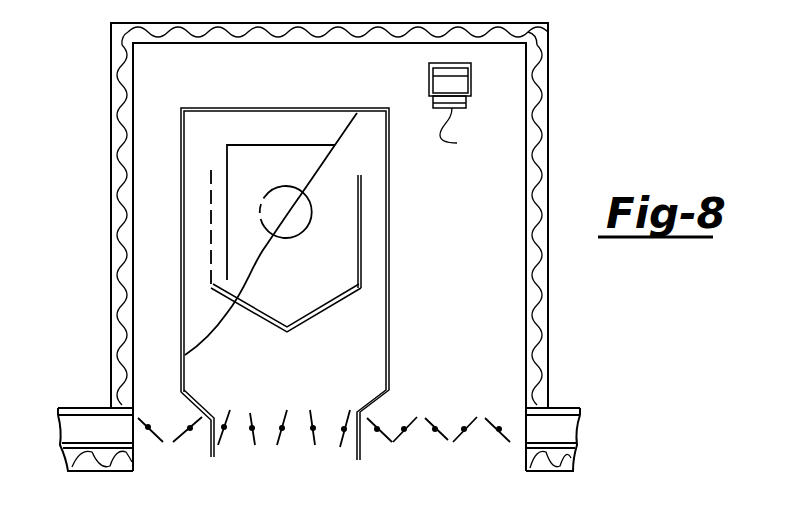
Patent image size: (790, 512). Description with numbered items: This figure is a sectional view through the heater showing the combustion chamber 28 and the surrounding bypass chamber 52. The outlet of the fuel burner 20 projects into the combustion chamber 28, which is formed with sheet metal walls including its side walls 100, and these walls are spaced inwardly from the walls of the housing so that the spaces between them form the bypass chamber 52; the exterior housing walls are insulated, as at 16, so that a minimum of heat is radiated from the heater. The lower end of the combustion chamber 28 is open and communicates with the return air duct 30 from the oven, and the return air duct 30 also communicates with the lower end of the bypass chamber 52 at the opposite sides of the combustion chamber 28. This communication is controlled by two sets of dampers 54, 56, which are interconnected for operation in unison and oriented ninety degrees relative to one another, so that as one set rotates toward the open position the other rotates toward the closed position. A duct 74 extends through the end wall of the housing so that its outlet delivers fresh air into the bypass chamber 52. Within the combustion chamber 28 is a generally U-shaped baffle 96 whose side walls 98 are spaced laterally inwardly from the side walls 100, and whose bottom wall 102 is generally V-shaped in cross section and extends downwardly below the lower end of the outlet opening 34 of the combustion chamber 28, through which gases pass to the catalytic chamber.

The bypass chamber 52 is at (187, 80).
The side walls of combustion chamber 100 is at (390, 306).
The outlet opening 34 is at (255, 153).
The baffle 96 is at (362, 201).
The side walls of baffle 98 is at (211, 208).
The bottom wall of baffle 102 is at (312, 322).
The fuel burner 20 is at (306, 196).
The combustion chamber 28 is at (367, 137).
The duct 74 is at (470, 82).
The insulation 16 is at (468, 131).
The dampers 54 is at (287, 417).
The dampers 56 is at (143, 422).
The return air duct 30 is at (594, 4).